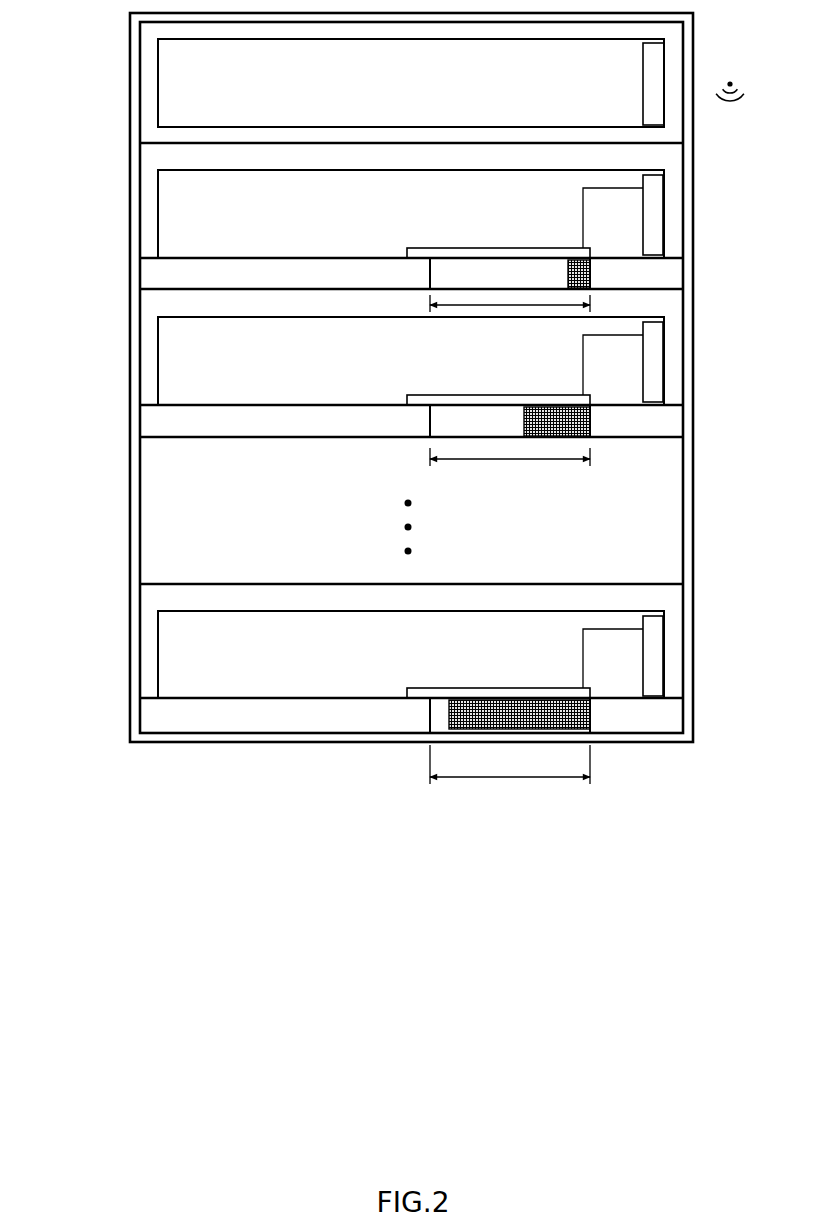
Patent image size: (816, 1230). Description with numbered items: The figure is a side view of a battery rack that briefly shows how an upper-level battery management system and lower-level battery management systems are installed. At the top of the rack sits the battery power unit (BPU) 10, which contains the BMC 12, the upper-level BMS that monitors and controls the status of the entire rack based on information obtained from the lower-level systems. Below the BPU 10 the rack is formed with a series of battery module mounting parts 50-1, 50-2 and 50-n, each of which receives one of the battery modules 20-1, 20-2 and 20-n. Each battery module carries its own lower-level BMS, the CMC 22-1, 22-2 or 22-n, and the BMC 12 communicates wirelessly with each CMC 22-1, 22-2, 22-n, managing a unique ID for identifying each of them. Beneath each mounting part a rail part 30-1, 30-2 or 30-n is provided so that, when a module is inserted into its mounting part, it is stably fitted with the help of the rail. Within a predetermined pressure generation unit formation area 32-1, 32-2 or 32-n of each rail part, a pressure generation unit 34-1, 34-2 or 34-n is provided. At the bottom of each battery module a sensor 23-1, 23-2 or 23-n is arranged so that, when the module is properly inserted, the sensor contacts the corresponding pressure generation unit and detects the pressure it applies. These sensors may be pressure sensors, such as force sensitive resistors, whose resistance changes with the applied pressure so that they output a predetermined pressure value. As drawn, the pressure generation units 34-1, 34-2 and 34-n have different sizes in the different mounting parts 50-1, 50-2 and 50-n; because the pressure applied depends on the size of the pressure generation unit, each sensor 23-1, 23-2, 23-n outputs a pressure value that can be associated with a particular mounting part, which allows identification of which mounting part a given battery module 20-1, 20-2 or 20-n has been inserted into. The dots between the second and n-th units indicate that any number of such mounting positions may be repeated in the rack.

The battery power unit (BPU) 10 is at (632, 36).
The BMC 12 is at (665, 58).
The battery module 20-1 is at (633, 166).
The battery module 20-2 is at (411, 361).
The battery module 20-n is at (411, 654).
The CMC 22-1 is at (665, 188).
The CMC 22-2 is at (653, 362).
The CMC 22-n is at (653, 656).
The sensor 23-1 is at (540, 252).
The sensor 23-2 is at (540, 399).
The sensor 23-n is at (540, 692).
The rail part 30-1 is at (158, 270).
The rail part 30-2 is at (158, 417).
The rail part 30-n is at (158, 710).
The pressure generation unit formation area 32-1 is at (512, 304).
The pressure generation unit formation area 32-2 is at (512, 458).
The pressure generation unit formation area 32-n is at (510, 764).
The pressure generation unit 34-1 is at (572, 268).
The pressure generation unit 34-2 is at (575, 418).
The pressure generation unit 34-n is at (575, 712).
The battery module mounting part 50-1 is at (125, 144).
The battery module mounting part 50-2 is at (125, 292).
The battery module mounting part 50-n is at (125, 585).